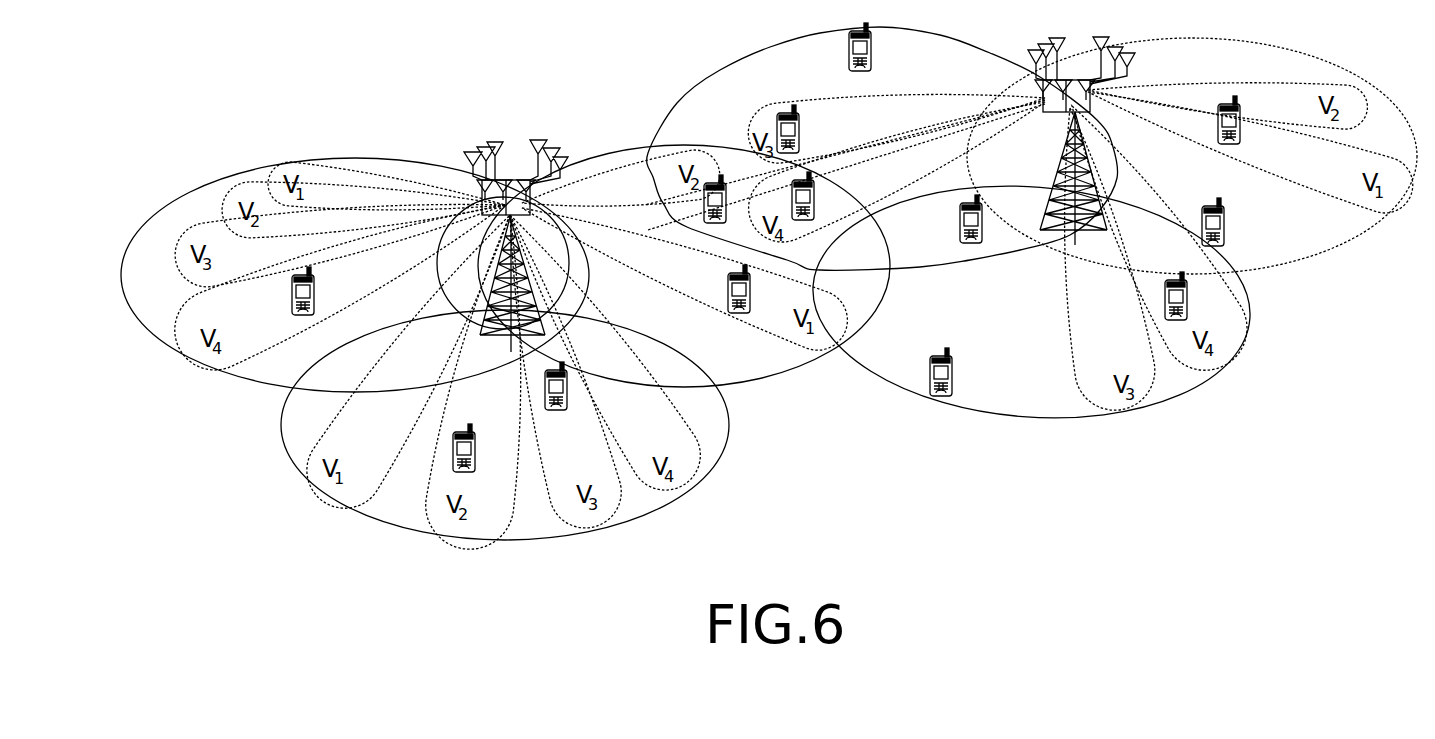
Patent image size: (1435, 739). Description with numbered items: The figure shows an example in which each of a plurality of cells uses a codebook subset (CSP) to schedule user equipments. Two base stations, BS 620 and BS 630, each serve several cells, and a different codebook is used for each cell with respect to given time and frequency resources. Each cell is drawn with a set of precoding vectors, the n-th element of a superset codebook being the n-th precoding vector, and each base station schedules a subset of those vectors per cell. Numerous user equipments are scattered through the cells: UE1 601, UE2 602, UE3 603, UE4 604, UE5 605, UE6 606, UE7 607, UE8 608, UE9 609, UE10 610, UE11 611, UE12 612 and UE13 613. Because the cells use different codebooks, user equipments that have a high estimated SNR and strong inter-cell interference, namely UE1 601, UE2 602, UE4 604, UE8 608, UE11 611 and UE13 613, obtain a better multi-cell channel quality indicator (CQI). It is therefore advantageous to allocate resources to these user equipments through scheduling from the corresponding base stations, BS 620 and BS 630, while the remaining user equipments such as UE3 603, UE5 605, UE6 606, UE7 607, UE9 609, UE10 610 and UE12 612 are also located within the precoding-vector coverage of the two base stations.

The UE1 601 is at (337, 295).
The UE2 602 is at (496, 449).
The UE3 603 is at (587, 387).
The UE4 604 is at (741, 316).
The UE5 605 is at (686, 217).
The UE6 606 is at (892, 56).
The UE7 607 is at (820, 131).
The UE8 608 is at (834, 199).
The UE9 609 is at (976, 247).
The UE10 610 is at (975, 376).
The UE11 611 is at (1212, 300).
The UE12 612 is at (1247, 225).
The UE13 613 is at (1261, 125).
The BS 620 is at (540, 246).
The BS 630 is at (1081, 168).